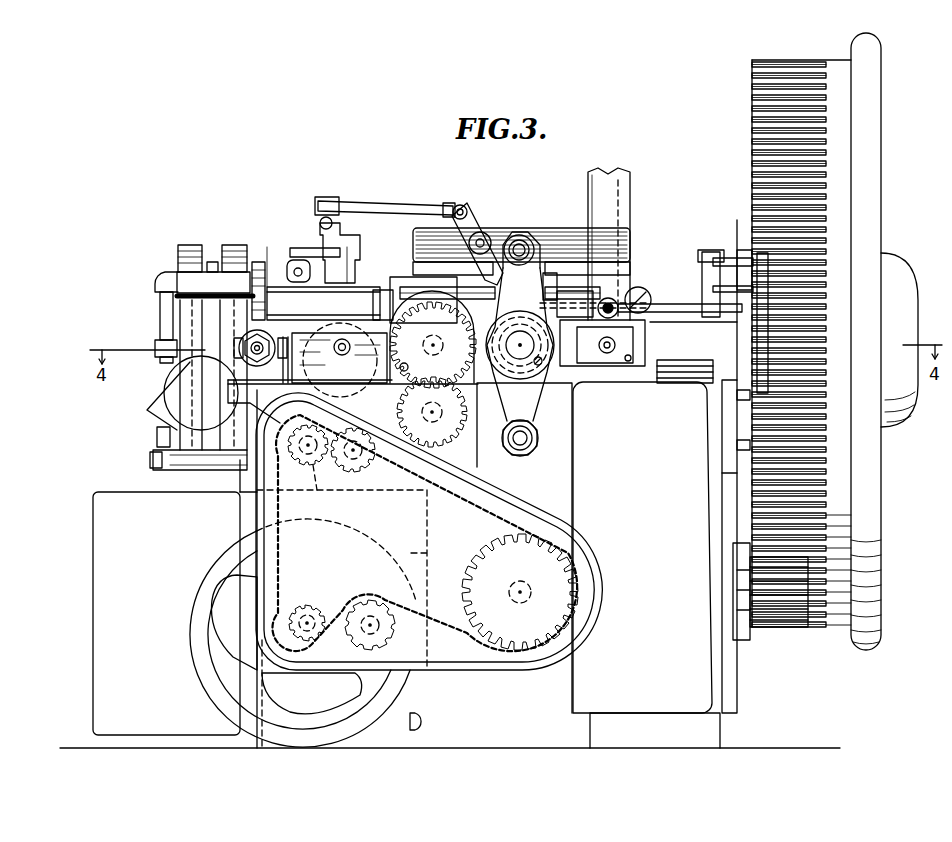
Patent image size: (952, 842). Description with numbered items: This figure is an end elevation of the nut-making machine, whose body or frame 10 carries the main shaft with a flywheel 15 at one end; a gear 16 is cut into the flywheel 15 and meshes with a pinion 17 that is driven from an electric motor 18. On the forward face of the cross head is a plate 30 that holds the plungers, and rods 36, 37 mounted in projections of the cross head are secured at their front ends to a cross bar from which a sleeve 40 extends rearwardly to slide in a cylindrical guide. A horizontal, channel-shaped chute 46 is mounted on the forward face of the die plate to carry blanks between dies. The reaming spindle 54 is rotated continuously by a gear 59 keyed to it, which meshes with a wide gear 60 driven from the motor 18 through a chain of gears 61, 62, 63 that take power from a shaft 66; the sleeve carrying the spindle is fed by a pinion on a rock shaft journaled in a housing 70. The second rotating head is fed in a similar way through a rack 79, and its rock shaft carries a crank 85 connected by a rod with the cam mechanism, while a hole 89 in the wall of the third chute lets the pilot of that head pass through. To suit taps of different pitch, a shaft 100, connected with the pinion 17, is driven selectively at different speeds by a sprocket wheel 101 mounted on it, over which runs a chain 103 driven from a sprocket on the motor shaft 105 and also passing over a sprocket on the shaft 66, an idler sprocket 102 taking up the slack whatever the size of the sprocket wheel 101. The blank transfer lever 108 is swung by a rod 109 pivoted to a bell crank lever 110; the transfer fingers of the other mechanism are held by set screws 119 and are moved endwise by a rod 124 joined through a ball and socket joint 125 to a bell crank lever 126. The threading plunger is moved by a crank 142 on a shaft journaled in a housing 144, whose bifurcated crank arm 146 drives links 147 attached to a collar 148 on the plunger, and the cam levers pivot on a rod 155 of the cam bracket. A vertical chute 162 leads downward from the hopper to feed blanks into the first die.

The body or frame 10 is at (698, 687).
The flywheel 15 is at (872, 131).
The gear 16 is at (752, 114).
The pinion 17 is at (782, 606).
The electric motor 18 is at (412, 697).
The plate 30 is at (530, 400).
The rod 36 is at (521, 252).
The rod 37 is at (527, 438).
The sleeve 40 is at (520, 350).
The horizontal chute 46 is at (592, 358).
The spindle 54 is at (436, 340).
The gear 59 is at (470, 375).
The wide gear 60 is at (452, 425).
The gear 61 is at (320, 462).
The gear 62 is at (366, 465).
The gear 63 is at (436, 440).
The shaft 66 is at (342, 566).
The housing 70 is at (352, 297).
The rack 79 is at (352, 352).
The crank 85 is at (212, 262).
The hole 89 is at (344, 370).
The shaft 100 is at (517, 600).
The sprocket wheel 101 is at (474, 558).
The idler sprocket 102 is at (359, 634).
The chain 103 is at (450, 510).
The shaft of motor 105 is at (309, 620).
The lever 108 is at (479, 226).
The rod 109 is at (398, 206).
The bell crank lever 110 is at (352, 237).
The set screws 119 is at (580, 330).
The rod 124 is at (686, 312).
The ball and socket joint 125 is at (612, 298).
The bell crank lever 126 is at (698, 280).
The crank 142 is at (160, 322).
The housing 144 is at (193, 290).
The bifurcated crank arm 146 is at (290, 318).
The links 147 is at (245, 338).
The collar 148 is at (270, 356).
The rod 155 is at (153, 458).
The vertical chute 162 is at (608, 190).